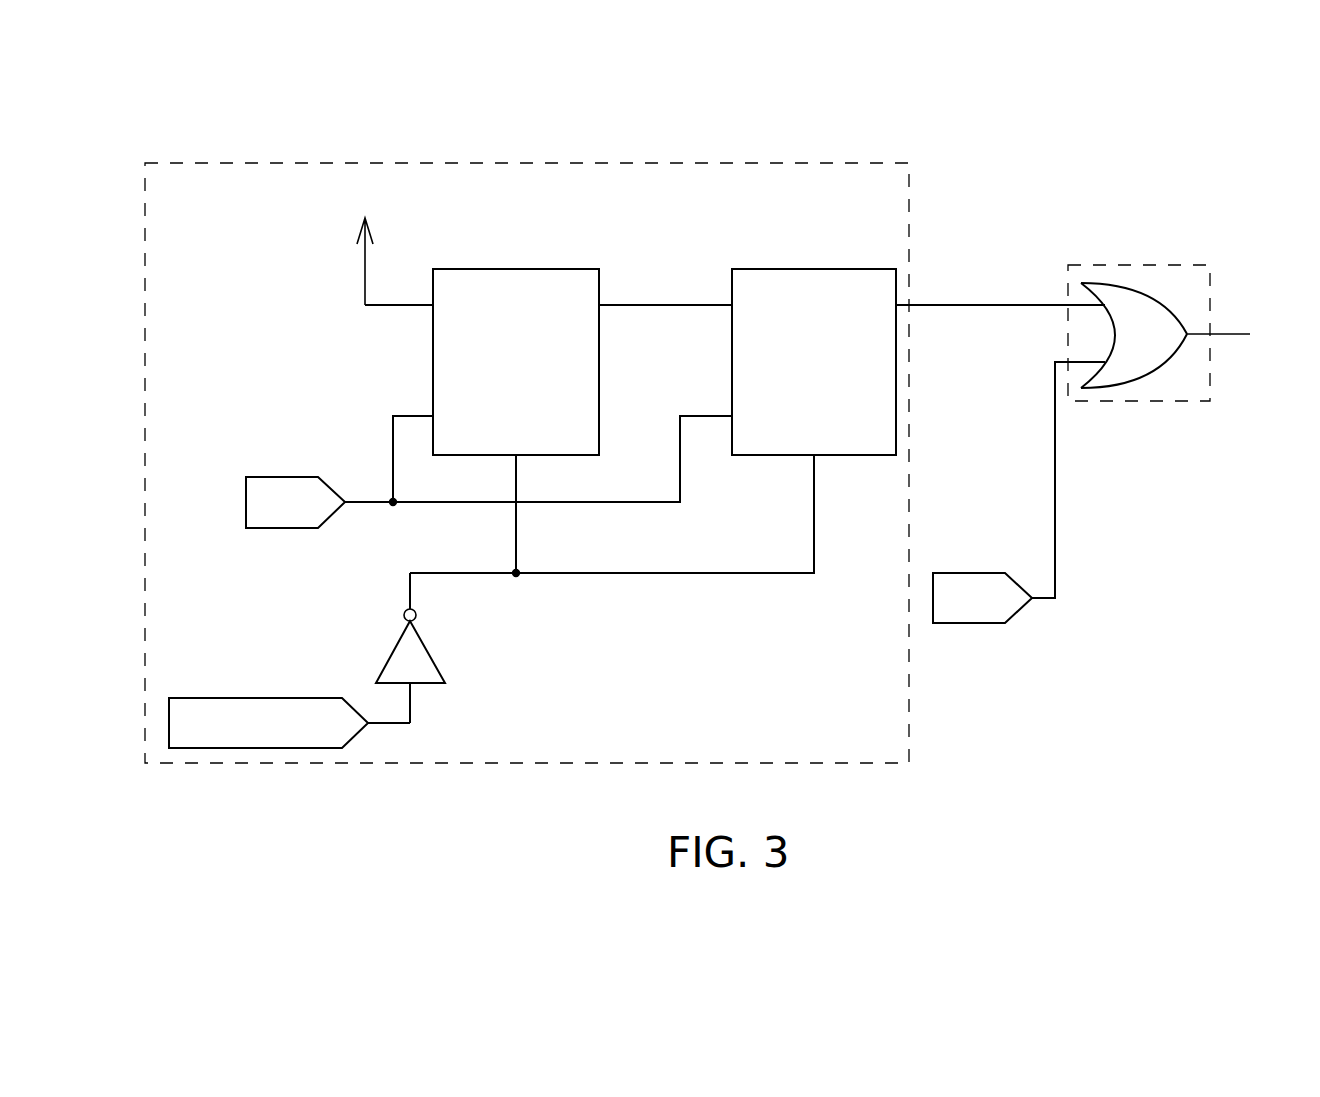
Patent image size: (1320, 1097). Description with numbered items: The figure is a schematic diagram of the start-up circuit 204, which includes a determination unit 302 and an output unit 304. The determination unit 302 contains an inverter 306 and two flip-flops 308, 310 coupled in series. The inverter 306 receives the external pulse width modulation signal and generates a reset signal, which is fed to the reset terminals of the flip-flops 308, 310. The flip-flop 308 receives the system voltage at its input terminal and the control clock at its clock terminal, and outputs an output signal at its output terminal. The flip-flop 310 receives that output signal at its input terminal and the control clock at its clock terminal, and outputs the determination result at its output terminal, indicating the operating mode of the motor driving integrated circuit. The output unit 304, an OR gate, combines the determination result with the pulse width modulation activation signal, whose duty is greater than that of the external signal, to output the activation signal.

The start-up circuit 204 is at (1162, 124).
The determination unit 302 is at (515, 162).
The output unit 304 is at (1138, 264).
The inverter 306 is at (445, 653).
The flip-flop 308 is at (523, 268).
The flip-flop 310 is at (821, 268).